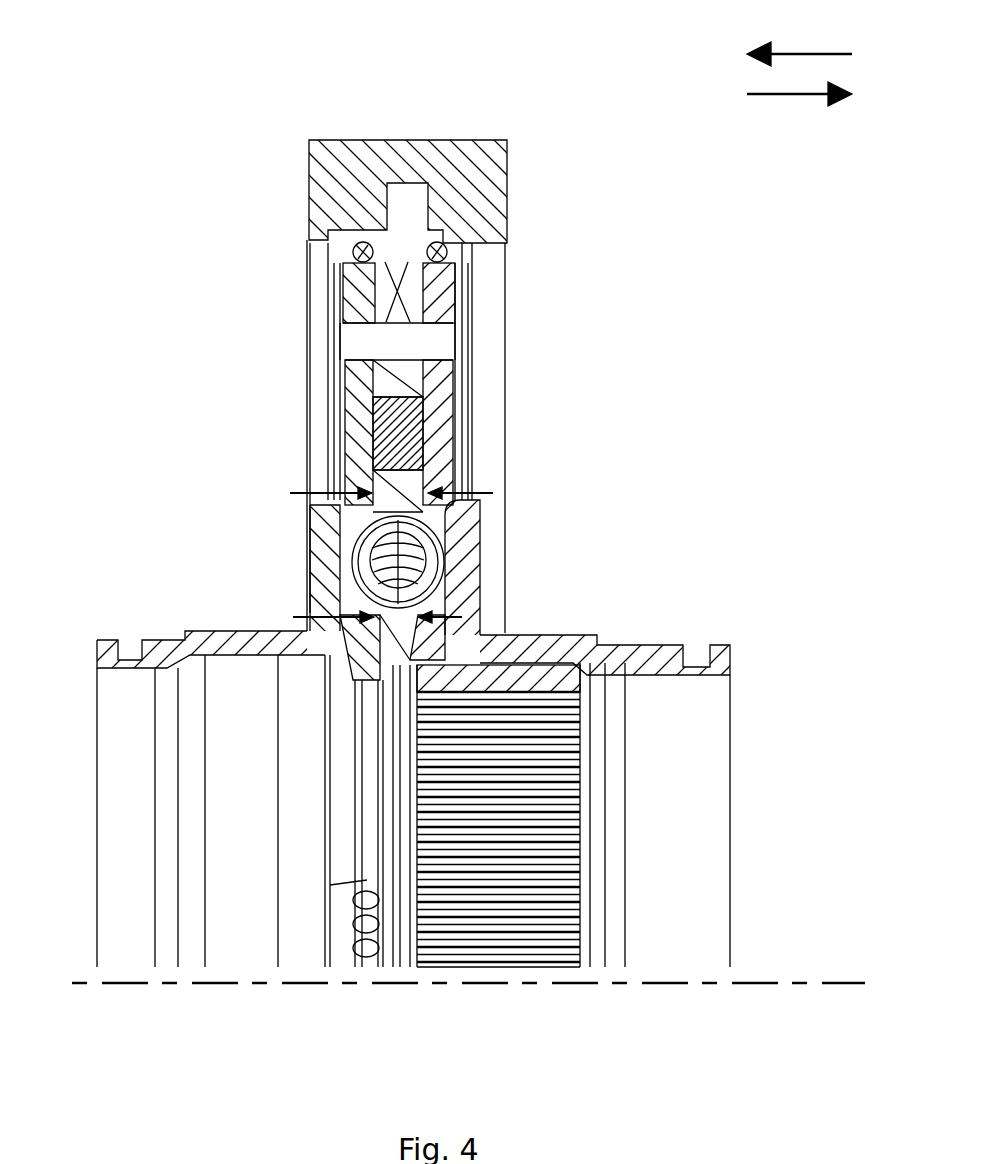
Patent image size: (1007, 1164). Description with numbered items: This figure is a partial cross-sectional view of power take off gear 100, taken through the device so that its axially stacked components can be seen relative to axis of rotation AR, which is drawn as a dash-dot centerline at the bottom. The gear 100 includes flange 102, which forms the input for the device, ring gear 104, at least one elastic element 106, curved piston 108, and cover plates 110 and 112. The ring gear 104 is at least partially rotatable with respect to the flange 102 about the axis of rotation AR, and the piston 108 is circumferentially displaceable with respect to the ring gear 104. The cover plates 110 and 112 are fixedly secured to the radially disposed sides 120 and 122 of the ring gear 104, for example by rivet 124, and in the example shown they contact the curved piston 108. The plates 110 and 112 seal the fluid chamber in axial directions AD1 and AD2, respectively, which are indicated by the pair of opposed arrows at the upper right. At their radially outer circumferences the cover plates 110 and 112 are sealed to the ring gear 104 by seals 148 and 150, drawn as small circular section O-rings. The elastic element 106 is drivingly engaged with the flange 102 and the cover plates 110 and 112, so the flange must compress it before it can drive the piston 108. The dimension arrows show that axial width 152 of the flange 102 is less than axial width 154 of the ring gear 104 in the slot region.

The power take off gear 100 is at (573, 50).
The flange 102 is at (573, 682).
The ring gear 104 is at (337, 140).
The elastic element 106 is at (365, 555).
The curved piston 108 is at (380, 440).
The cover plate 110 is at (643, 645).
The cover plate 112 is at (170, 640).
The radially disposed side of the ring gear 120 is at (385, 300).
The radially disposed side of the ring gear 122 is at (408, 300).
The rivet 124 is at (357, 342).
The seal 148 is at (440, 244).
The seal 150 is at (356, 244).
The axial width of the flange 152 is at (322, 612).
The axial width of the ring gear 154 is at (487, 493).
The axial direction AD1 is at (787, 97).
The axial direction AD2 is at (793, 53).
The axis of rotation AR is at (758, 983).